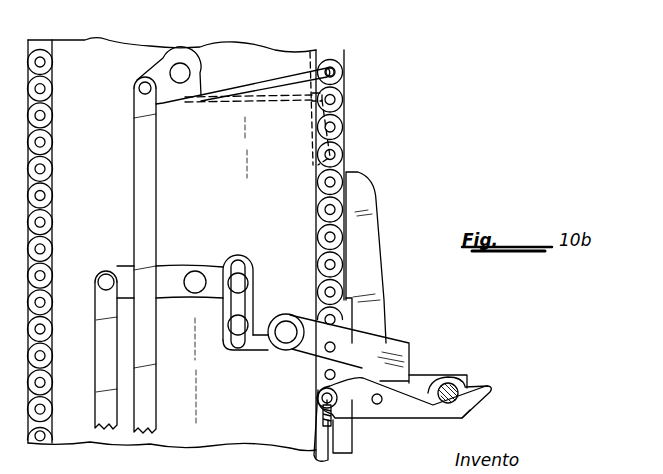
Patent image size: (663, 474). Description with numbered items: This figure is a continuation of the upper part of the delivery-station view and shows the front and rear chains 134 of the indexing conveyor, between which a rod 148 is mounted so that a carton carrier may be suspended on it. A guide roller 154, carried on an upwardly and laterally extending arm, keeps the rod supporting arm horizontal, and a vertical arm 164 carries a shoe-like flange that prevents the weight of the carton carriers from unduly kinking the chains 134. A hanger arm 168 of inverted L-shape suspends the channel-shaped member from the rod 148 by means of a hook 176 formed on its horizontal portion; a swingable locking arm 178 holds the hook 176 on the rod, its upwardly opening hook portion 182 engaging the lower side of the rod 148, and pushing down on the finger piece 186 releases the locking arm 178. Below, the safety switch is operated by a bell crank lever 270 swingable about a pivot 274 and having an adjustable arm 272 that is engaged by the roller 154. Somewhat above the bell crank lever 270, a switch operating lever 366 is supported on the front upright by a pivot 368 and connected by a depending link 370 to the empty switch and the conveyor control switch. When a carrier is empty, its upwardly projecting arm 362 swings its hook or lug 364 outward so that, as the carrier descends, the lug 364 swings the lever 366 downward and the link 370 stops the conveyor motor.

The chains 134 is at (45, 216).
The rod 148 is at (446, 385).
The guide roller 154 is at (283, 313).
The vertical arm 164 is at (372, 222).
The hanger arm 168 is at (337, 424).
The hook 176 is at (460, 378).
The locking arm 178 is at (427, 411).
The hook portion 182 is at (466, 395).
The finger piece 186 is at (468, 405).
The bell crank lever 270 is at (215, 272).
The adjustable arm 272 is at (252, 345).
The pivot 274 is at (195, 271).
The upwardly projecting arm 362 is at (312, 112).
The hook or lug 364 is at (312, 52).
The switch operating lever 366 is at (272, 78).
The pivot 368 is at (183, 66).
The depending link 370 is at (136, 165).